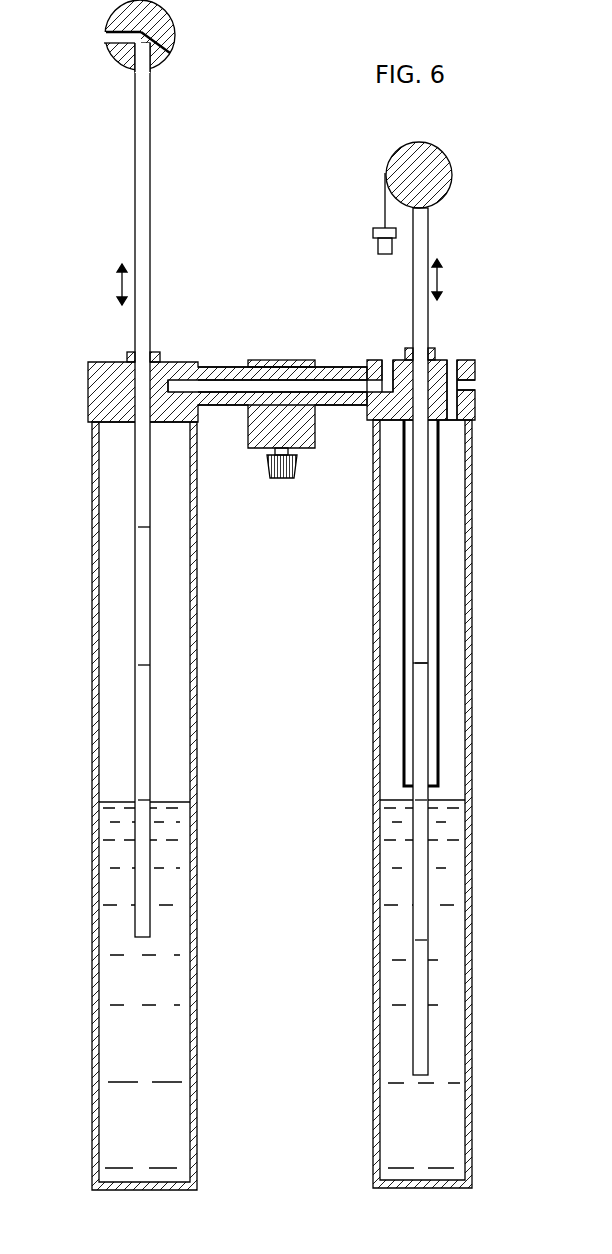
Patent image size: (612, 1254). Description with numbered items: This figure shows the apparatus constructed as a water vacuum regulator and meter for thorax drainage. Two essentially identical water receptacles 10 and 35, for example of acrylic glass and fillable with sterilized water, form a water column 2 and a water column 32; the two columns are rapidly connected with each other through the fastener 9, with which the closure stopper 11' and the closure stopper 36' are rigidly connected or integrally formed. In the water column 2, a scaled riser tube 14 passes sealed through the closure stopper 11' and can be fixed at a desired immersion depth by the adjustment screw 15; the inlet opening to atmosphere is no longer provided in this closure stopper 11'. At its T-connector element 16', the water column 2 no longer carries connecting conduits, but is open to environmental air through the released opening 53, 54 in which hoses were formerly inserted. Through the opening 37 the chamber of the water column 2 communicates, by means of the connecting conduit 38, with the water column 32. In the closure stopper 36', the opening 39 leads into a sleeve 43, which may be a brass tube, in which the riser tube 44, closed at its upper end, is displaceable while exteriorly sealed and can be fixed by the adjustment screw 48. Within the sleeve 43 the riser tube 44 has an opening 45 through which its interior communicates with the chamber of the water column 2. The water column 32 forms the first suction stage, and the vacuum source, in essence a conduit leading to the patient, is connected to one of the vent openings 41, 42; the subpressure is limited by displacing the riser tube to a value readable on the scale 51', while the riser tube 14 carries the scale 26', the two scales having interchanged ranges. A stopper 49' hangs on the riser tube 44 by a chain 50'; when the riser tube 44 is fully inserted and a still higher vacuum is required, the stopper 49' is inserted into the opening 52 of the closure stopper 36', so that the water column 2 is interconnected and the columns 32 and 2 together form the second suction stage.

The water column 2 is at (95, 1170).
The fastener 9 is at (303, 447).
The water receptacle 10 is at (93, 528).
The closure stopper 11' is at (206, 405).
The riser tube 14 is at (135, 192).
The adjustment screw 15 is at (130, 352).
The T-connector element 16' is at (112, 36).
The scale 26' is at (105, 657).
The water column 32 is at (374, 1170).
The water receptacle 35 is at (472, 525).
The closure stopper 36' is at (448, 398).
The opening 37 is at (180, 425).
The connecting conduit 38 is at (256, 393).
The opening 39 is at (366, 368).
The vent opening 41 is at (452, 362).
The vent opening 42 is at (460, 384).
The sleeve 43 is at (402, 588).
The riser tube 44 is at (413, 508).
The opening 45 is at (416, 638).
The adjustment screw 48 is at (430, 353).
The stopper 49' is at (364, 249).
The chain 50' is at (391, 185).
The scale 51' is at (461, 684).
The opening 52 is at (387, 360).
The released opening 53 is at (118, 62).
The released opening 54 is at (168, 54).